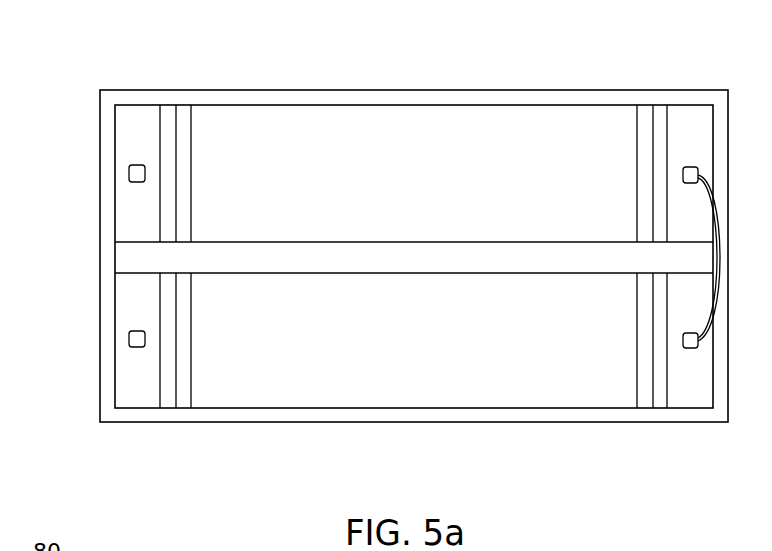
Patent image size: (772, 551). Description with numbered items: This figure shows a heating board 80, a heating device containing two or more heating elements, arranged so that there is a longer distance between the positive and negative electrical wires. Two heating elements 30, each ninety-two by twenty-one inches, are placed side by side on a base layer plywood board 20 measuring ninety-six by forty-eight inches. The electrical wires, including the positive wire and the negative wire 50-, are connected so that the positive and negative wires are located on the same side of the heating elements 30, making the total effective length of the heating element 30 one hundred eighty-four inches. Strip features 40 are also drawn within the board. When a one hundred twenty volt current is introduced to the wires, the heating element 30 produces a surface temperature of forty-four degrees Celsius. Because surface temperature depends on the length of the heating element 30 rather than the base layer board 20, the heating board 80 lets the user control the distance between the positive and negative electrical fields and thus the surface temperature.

The heating board 80 is at (66, 65).
The base layer plywood board 20 is at (213, 428).
The heating element 30 is at (329, 408).
The busbar strips 40 is at (654, 393).
The negative electrical wire 50- is at (137, 339).